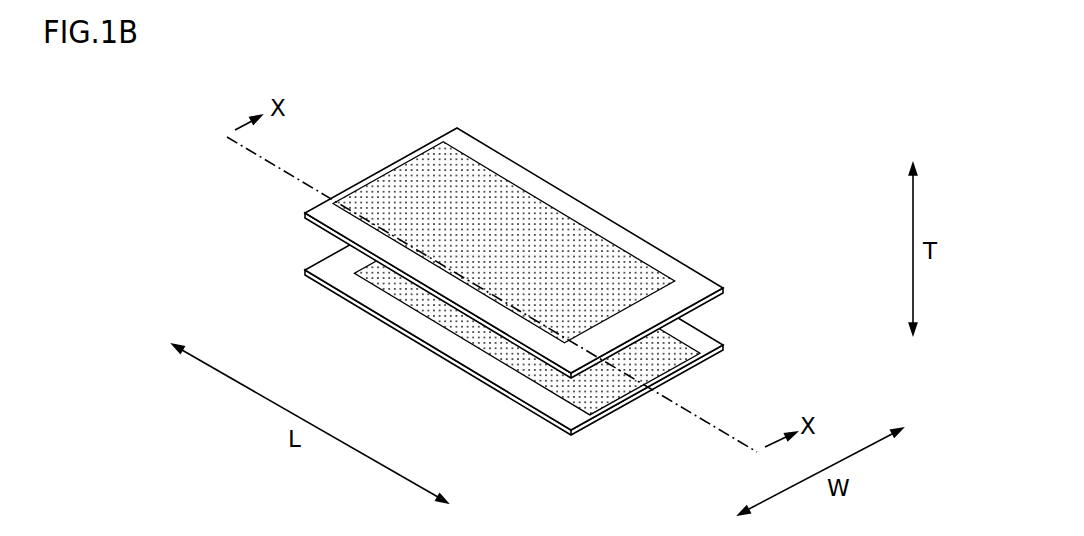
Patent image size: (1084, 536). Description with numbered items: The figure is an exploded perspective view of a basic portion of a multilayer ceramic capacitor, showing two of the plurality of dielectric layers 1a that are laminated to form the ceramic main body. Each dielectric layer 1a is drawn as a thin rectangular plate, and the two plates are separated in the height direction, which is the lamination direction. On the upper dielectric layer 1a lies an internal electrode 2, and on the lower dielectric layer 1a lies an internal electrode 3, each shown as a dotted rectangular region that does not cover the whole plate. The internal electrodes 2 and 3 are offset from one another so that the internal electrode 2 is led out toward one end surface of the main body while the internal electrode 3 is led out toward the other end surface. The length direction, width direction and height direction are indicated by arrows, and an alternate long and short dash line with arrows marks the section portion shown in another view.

The dielectric layer 1a is at (702, 287).
The internal electrode 2 is at (527, 225).
The internal electrode 3 is at (467, 325).